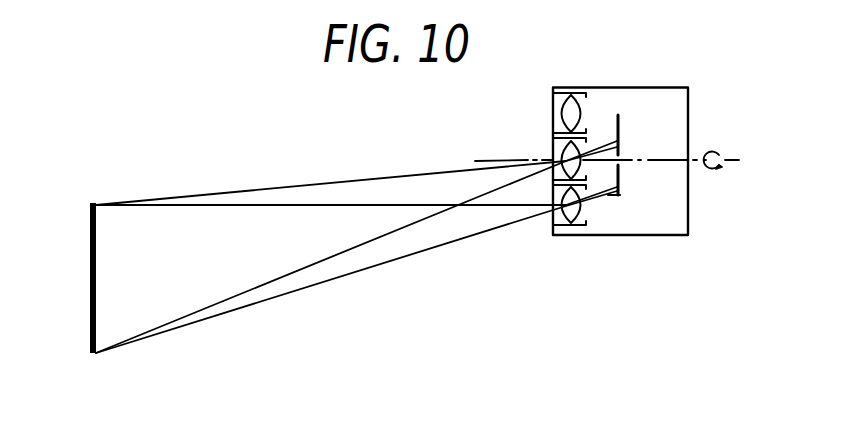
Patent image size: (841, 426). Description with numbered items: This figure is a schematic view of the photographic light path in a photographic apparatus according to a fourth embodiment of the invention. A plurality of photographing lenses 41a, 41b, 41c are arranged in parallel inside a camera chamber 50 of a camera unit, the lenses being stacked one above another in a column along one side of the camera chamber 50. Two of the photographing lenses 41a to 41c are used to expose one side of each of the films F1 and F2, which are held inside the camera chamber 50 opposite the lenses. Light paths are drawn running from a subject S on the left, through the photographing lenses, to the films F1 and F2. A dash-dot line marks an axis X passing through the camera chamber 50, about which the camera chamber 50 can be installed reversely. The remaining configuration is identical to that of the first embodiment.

The screen S is at (91, 282).
The camera chamber 50 is at (689, 99).
The photographing lens 41a is at (564, 226).
The photographing lens 41b is at (580, 152).
The photographing lens 41c is at (562, 112).
The film F1 is at (620, 196).
The film F2 is at (619, 118).
The rotation axis X is at (617, 160).